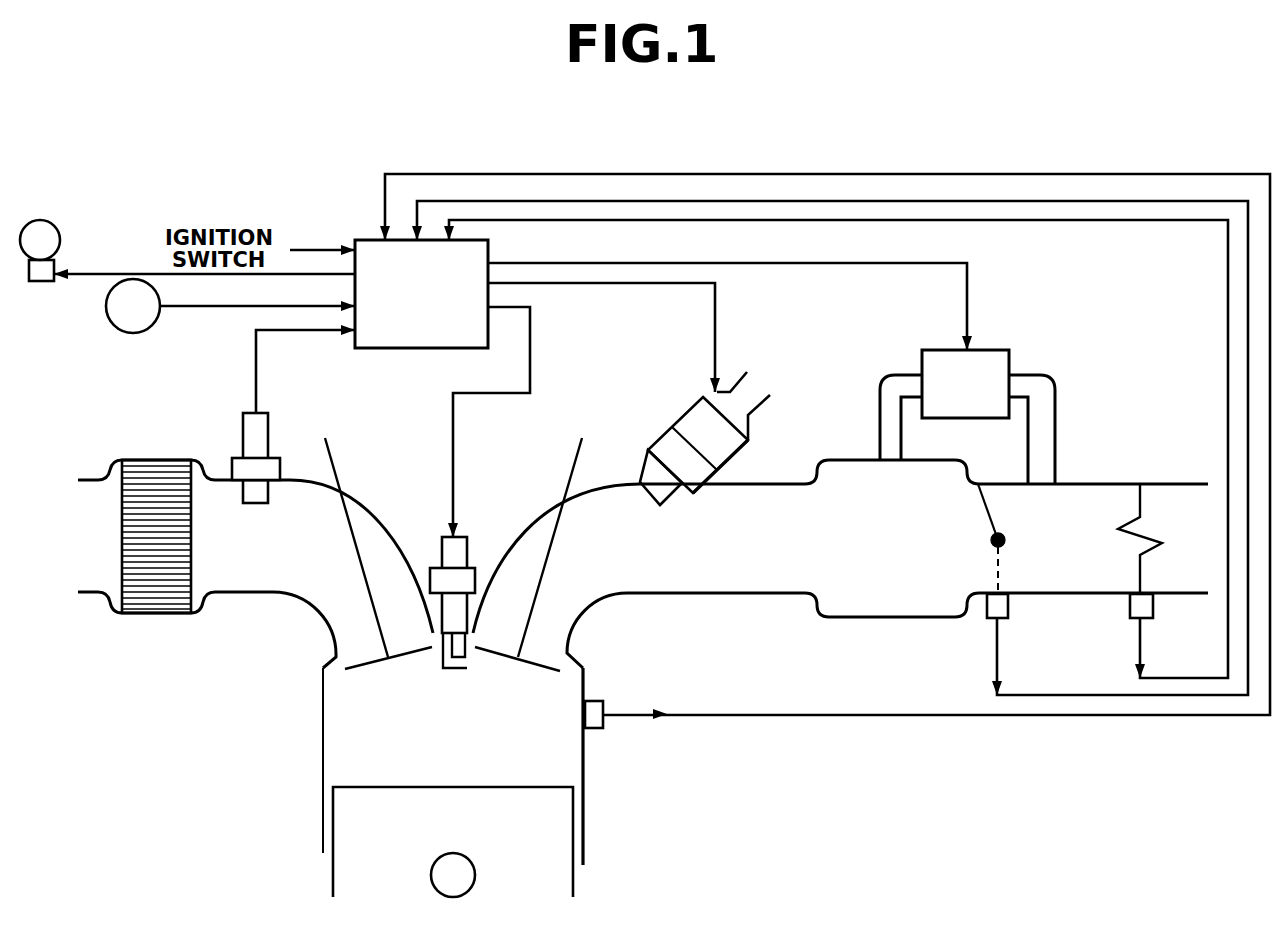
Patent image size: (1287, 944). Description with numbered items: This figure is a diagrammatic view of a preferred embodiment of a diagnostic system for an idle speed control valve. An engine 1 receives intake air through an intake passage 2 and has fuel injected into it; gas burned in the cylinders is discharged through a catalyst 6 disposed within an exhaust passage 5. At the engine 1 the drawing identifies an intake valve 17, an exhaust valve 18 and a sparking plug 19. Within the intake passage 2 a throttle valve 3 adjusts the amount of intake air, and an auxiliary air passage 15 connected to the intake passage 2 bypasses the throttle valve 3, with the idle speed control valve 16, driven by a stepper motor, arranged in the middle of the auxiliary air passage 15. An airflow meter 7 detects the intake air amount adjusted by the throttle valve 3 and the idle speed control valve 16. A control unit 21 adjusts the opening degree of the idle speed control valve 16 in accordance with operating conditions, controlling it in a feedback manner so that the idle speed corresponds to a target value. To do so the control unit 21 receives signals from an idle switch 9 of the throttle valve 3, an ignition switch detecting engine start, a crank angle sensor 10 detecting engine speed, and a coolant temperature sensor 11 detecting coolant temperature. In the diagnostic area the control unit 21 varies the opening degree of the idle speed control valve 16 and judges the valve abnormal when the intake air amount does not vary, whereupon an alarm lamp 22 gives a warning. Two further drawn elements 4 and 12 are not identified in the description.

The engine 1 is at (320, 726).
The intake passage 2 is at (776, 596).
The throttle valve 3 is at (1008, 582).
The oxygen sensor 4 is at (688, 420).
The exhaust passage 5 is at (252, 594).
The catalyst 6 is at (140, 462).
The airflow meter 7 is at (1128, 602).
The idle switch 9 is at (985, 606).
The crank angle sensor 10 is at (108, 318).
The coolant temperature sensor 11 is at (597, 722).
The airflow meter 12 is at (253, 440).
The auxiliary air passage 15 is at (1056, 437).
The idle speed control valve 16 is at (1000, 347).
The intake valve 17 is at (567, 478).
The exhaust valve 18 is at (336, 462).
The sparking plug 19 is at (441, 545).
The control unit 21 is at (370, 238).
The alarm lamp 22 is at (38, 218).